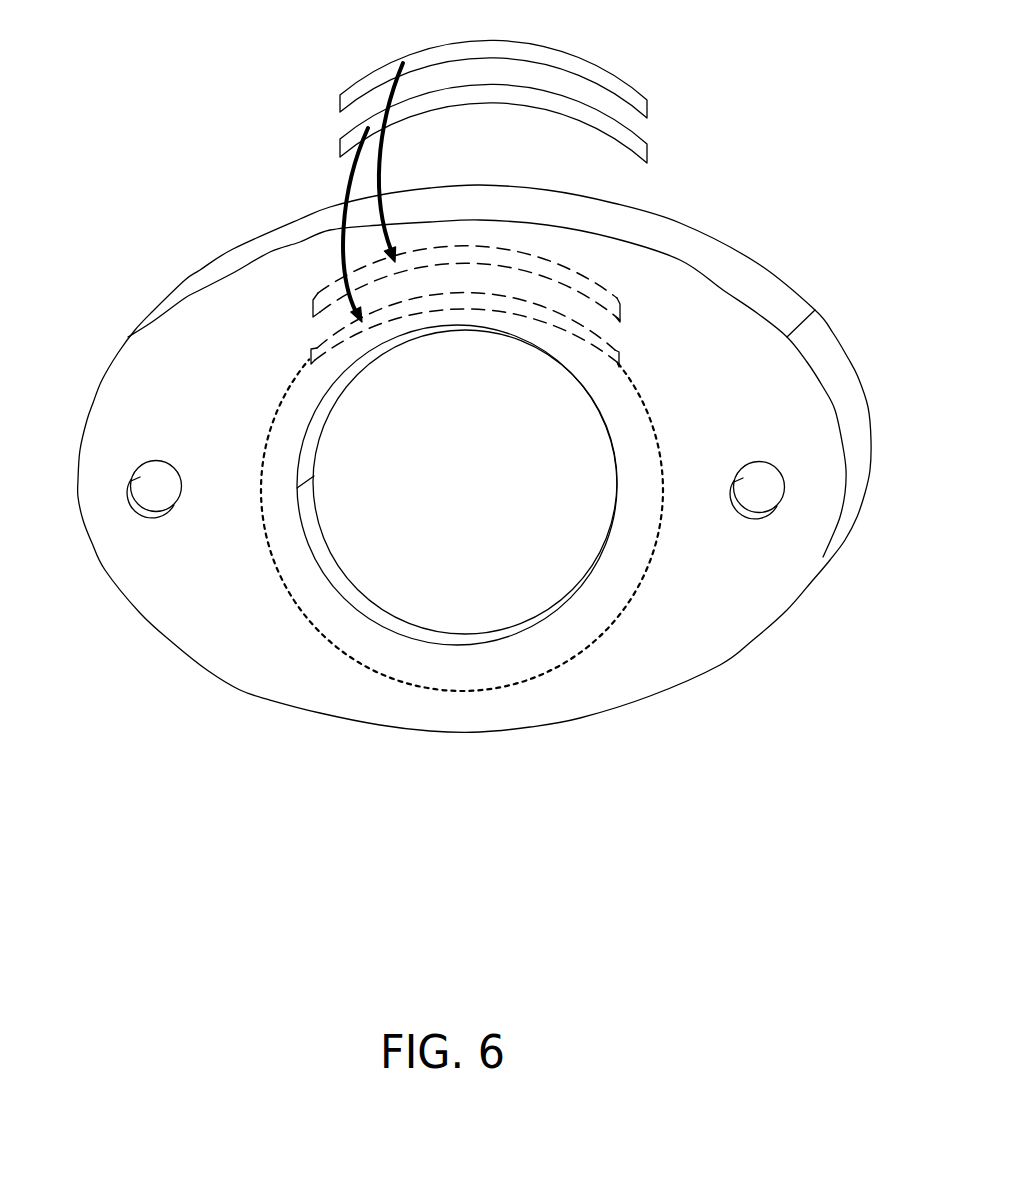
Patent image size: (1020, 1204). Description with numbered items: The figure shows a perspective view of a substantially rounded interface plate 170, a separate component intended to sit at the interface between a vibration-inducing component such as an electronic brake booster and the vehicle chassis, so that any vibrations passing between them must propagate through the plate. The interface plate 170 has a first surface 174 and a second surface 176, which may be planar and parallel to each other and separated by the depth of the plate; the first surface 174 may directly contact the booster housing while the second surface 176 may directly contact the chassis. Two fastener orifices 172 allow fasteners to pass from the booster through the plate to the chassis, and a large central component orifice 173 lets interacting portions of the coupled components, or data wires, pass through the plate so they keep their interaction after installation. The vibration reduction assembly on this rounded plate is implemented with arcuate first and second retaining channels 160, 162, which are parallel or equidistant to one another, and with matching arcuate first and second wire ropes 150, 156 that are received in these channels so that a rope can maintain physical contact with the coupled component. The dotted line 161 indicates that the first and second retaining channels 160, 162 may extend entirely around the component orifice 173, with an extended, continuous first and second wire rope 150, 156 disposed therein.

The first wire rope 150 is at (367, 82).
The second wire rope 156 is at (345, 145).
The first retaining channel 160 is at (598, 287).
The dotted line 161 is at (553, 667).
The second retaining channel 162 is at (613, 347).
The interface plate 170 is at (238, 252).
The fastener orifice 172 is at (149, 482).
The component orifice 173 is at (458, 600).
The first surface 174 is at (168, 347).
The second surface 176 is at (850, 360).